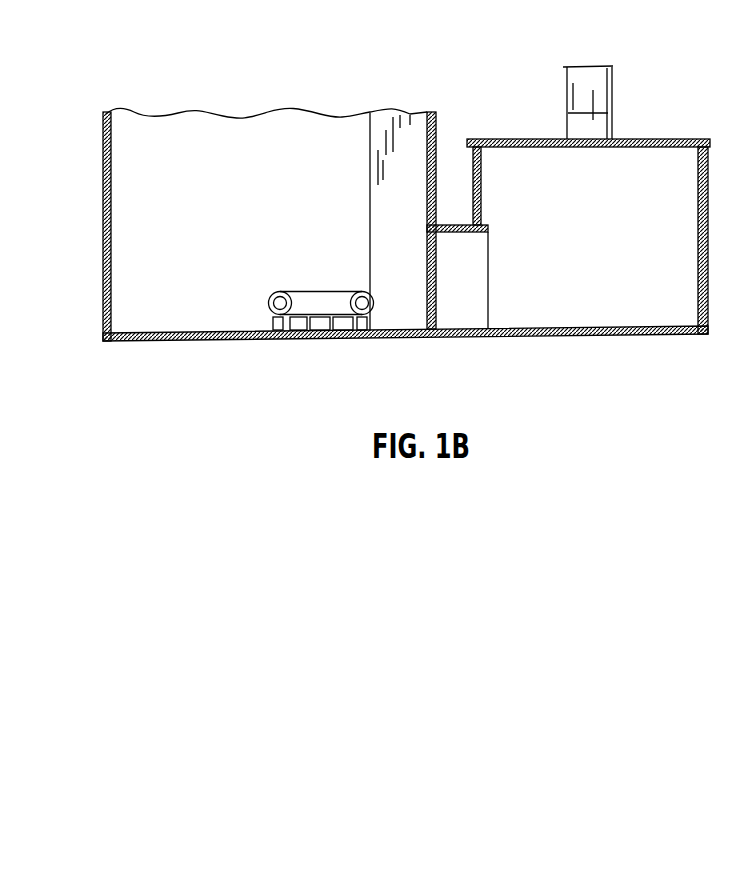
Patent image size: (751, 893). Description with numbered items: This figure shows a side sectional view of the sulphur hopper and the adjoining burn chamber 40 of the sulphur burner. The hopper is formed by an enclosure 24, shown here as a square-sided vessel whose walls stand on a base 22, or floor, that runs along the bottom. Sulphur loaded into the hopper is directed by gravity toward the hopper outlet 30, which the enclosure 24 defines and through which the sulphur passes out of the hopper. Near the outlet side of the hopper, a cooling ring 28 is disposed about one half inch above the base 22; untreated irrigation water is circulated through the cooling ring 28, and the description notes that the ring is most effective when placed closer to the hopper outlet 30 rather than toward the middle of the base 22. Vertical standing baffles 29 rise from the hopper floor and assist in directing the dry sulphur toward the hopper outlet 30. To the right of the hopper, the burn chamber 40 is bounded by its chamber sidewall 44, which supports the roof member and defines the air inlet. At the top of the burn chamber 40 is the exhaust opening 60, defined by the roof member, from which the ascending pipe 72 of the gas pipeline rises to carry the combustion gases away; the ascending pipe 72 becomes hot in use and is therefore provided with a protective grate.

The base 22 is at (198, 332).
The enclosure 24 is at (103, 246).
The cooling ring 28 is at (305, 305).
The vertical standing baffles 29 is at (400, 237).
The hopper outlet 30 is at (448, 253).
The burn chamber 40 is at (602, 247).
The chamber sidewall 44 is at (707, 272).
The exhaust opening 60 is at (597, 127).
The ascending pipe 72 is at (602, 79).